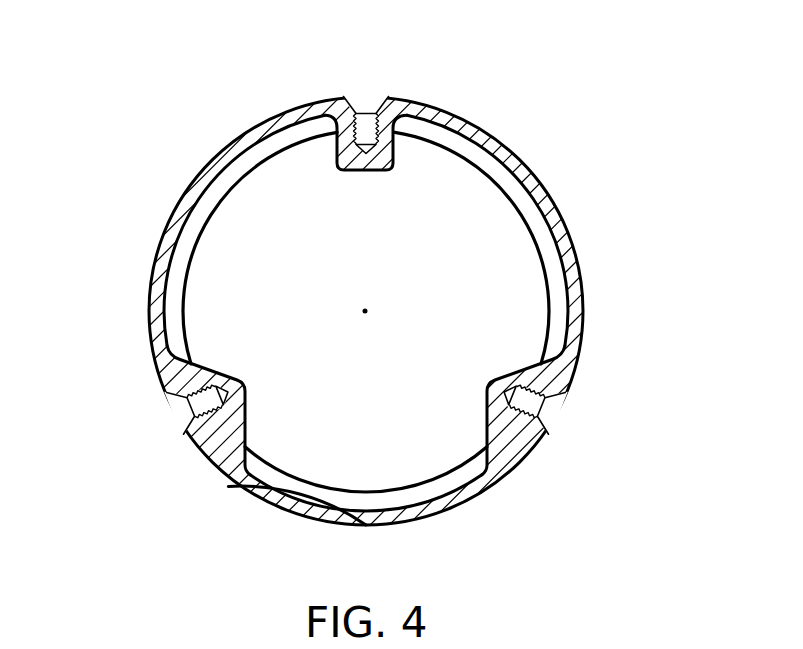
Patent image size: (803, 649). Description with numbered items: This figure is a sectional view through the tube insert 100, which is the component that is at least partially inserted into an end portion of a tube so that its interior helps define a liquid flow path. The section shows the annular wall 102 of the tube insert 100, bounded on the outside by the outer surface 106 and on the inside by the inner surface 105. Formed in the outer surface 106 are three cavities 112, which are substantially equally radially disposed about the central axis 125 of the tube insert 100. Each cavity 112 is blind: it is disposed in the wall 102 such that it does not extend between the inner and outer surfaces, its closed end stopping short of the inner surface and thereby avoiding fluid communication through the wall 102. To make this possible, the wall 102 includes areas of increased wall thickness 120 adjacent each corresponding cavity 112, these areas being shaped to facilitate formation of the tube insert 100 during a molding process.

The tube insert 100 is at (523, 117).
The wall 102 is at (243, 137).
The inner surface / inner tube wall 105 is at (192, 245).
The outer surface 106 is at (266, 506).
The cavity 112 is at (373, 97).
The area of increased wall thickness 120 is at (357, 171).
The central axis 125 is at (365, 311).